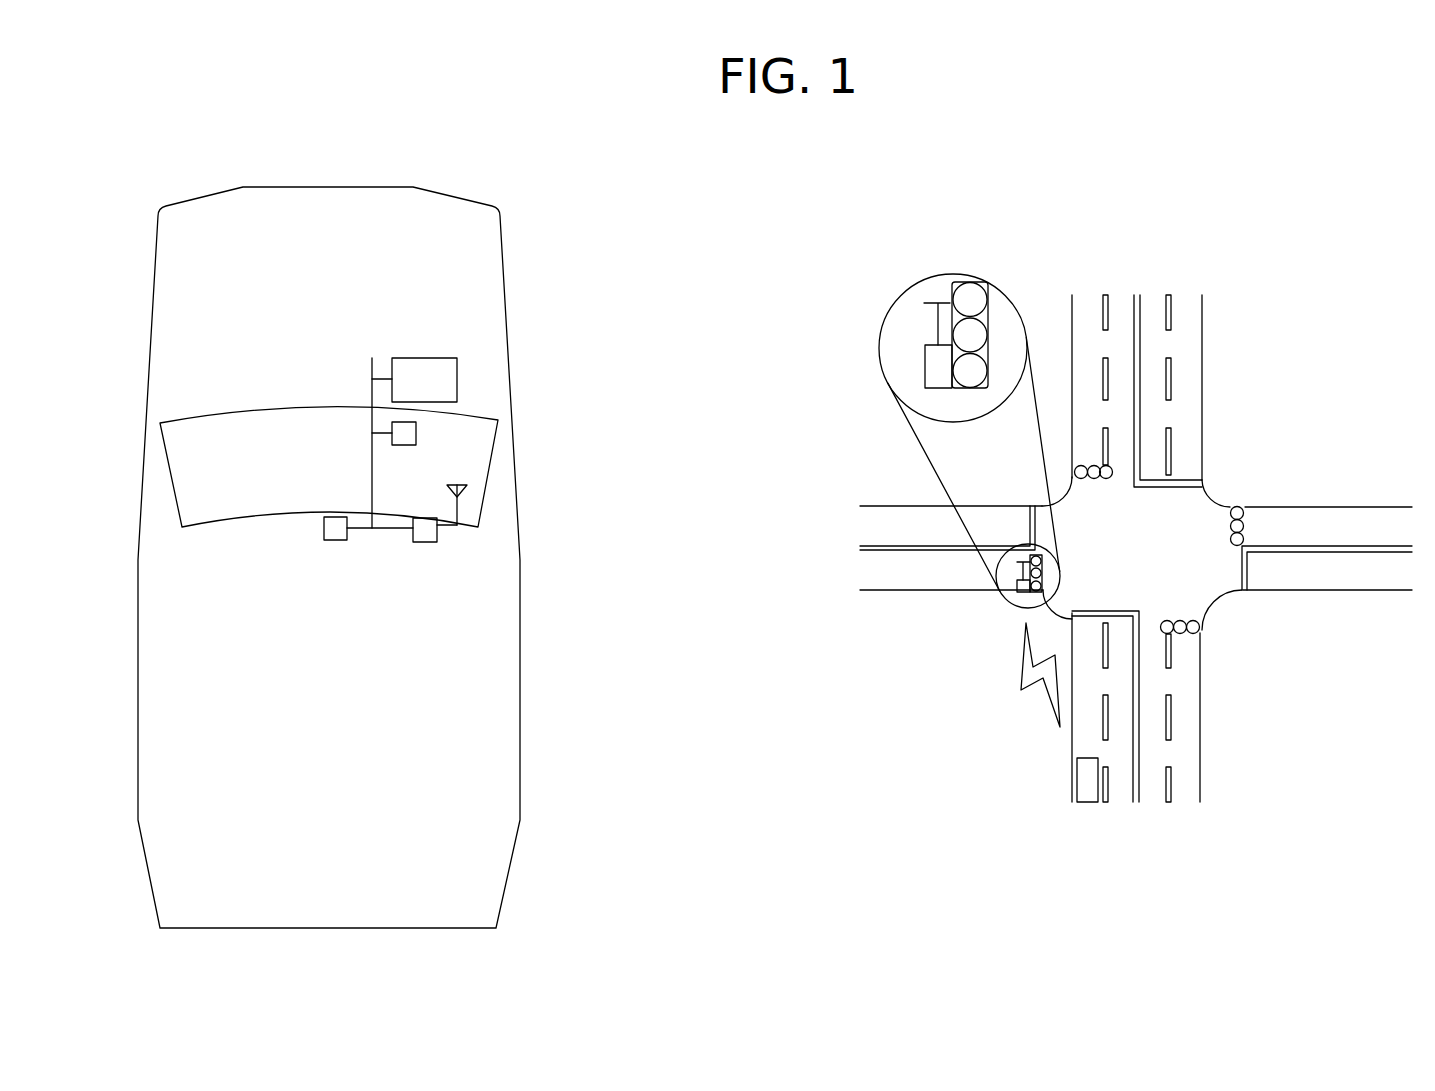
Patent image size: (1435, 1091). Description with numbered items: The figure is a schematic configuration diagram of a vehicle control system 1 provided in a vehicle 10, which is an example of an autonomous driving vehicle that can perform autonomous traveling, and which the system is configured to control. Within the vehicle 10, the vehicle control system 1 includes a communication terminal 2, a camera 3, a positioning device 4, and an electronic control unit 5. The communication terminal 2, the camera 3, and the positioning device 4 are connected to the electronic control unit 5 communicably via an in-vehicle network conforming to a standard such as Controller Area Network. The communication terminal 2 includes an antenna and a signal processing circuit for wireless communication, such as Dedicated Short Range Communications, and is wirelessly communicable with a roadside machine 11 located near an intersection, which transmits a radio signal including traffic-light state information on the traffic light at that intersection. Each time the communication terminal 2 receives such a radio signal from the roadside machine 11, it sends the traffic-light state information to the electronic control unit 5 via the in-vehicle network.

The vehicle control system 1 is at (614, 435).
The communication terminal 2 is at (437, 538).
The camera 3 is at (347, 537).
The positioning device 4 is at (416, 433).
The electronic control unit 5 is at (457, 380).
The vehicle 10 is at (520, 780).
The roadside machine 11 is at (925, 358).